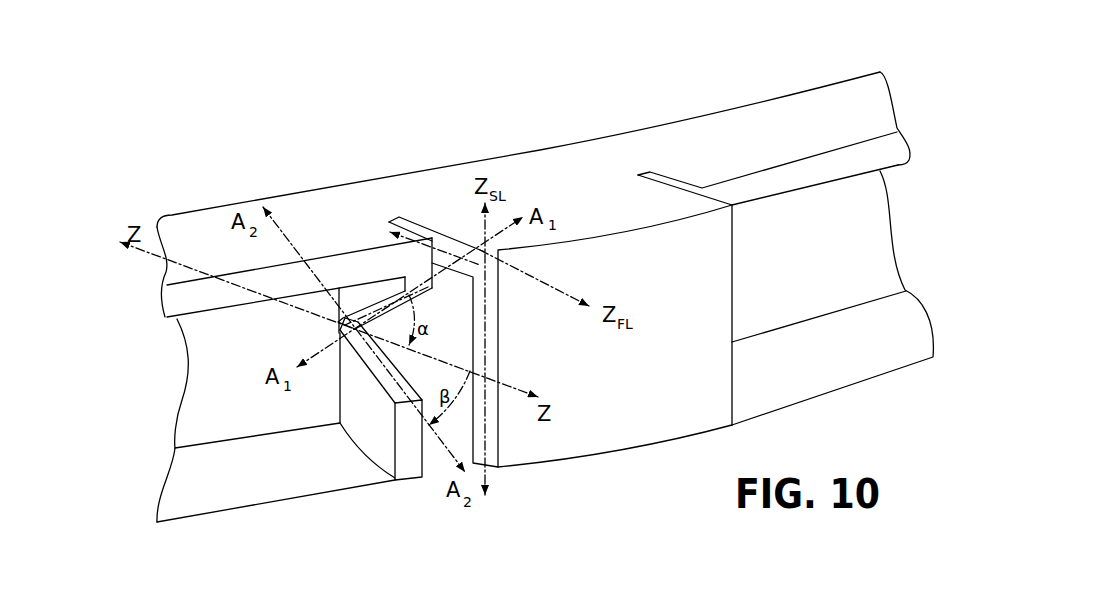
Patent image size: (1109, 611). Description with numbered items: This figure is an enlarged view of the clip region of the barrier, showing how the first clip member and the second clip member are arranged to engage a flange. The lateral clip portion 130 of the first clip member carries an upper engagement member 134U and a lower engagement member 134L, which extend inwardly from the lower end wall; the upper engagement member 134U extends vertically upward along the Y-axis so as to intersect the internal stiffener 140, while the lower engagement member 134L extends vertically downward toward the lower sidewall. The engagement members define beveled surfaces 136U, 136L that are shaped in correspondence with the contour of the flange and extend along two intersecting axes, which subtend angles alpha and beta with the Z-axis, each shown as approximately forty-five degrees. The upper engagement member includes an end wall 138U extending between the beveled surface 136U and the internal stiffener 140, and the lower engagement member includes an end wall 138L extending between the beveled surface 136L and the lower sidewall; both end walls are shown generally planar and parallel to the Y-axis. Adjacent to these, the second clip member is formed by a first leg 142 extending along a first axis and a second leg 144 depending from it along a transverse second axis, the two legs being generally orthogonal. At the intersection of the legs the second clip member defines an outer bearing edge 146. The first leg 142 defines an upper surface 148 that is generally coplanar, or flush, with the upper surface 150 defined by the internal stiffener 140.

The clip portion 130 is at (343, 445).
The upper engagement member 134U is at (357, 300).
The lower engagement member 134L is at (377, 433).
The beveled surface 136U is at (412, 291).
The beveled surface 136L is at (383, 367).
The end wall 138U is at (424, 258).
The end wall 138L is at (413, 450).
The internal stiffener 140 is at (333, 273).
The first leg 142 is at (498, 249).
The second leg 144 is at (643, 349).
The outer bearing edge 146 is at (660, 222).
The upper surface 148 is at (463, 207).
The upper surface 150 is at (313, 227).